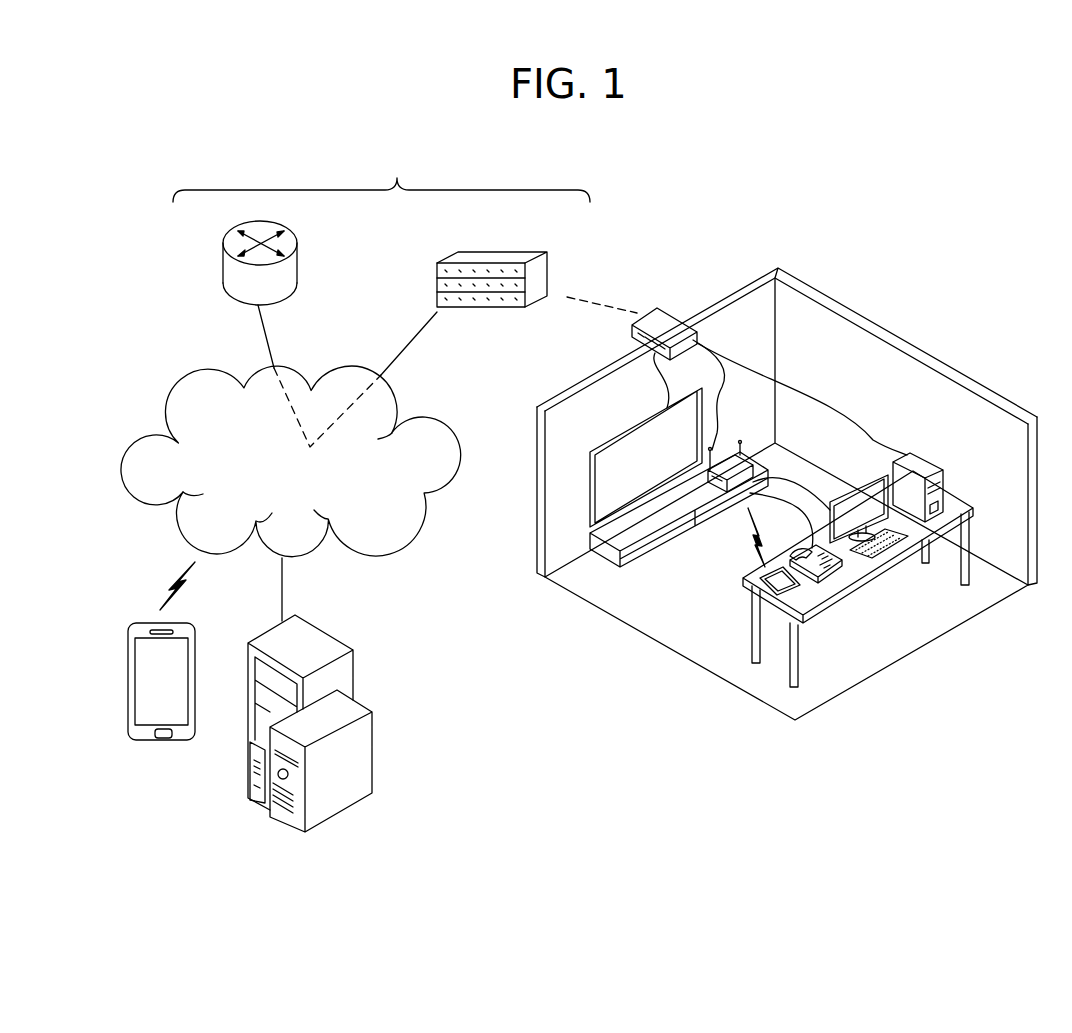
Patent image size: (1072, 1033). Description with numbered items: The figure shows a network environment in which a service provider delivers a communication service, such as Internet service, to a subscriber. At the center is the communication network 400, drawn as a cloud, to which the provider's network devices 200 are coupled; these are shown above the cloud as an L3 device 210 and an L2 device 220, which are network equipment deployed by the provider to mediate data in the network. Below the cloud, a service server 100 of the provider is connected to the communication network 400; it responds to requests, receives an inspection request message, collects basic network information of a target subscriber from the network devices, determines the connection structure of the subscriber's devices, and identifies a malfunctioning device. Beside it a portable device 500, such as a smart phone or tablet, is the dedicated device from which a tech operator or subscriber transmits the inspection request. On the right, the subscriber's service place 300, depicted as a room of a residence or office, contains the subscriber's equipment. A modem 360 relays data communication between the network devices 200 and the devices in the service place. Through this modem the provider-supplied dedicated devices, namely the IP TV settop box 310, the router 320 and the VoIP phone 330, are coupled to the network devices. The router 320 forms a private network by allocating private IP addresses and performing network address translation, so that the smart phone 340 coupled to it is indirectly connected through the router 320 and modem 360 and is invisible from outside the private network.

The service server 100 is at (320, 628).
The network devices 200 is at (381, 169).
The L3 device 210 is at (298, 256).
The L2 device 220 is at (495, 252).
The service place 300 is at (845, 283).
The IP TV settop box 310 is at (637, 430).
The router 320 is at (910, 455).
The VoIP phone 330 is at (837, 578).
The smart phone 340 is at (750, 590).
The modem 360 is at (663, 310).
The communication network 400 is at (443, 413).
The portable device 500 is at (160, 742).